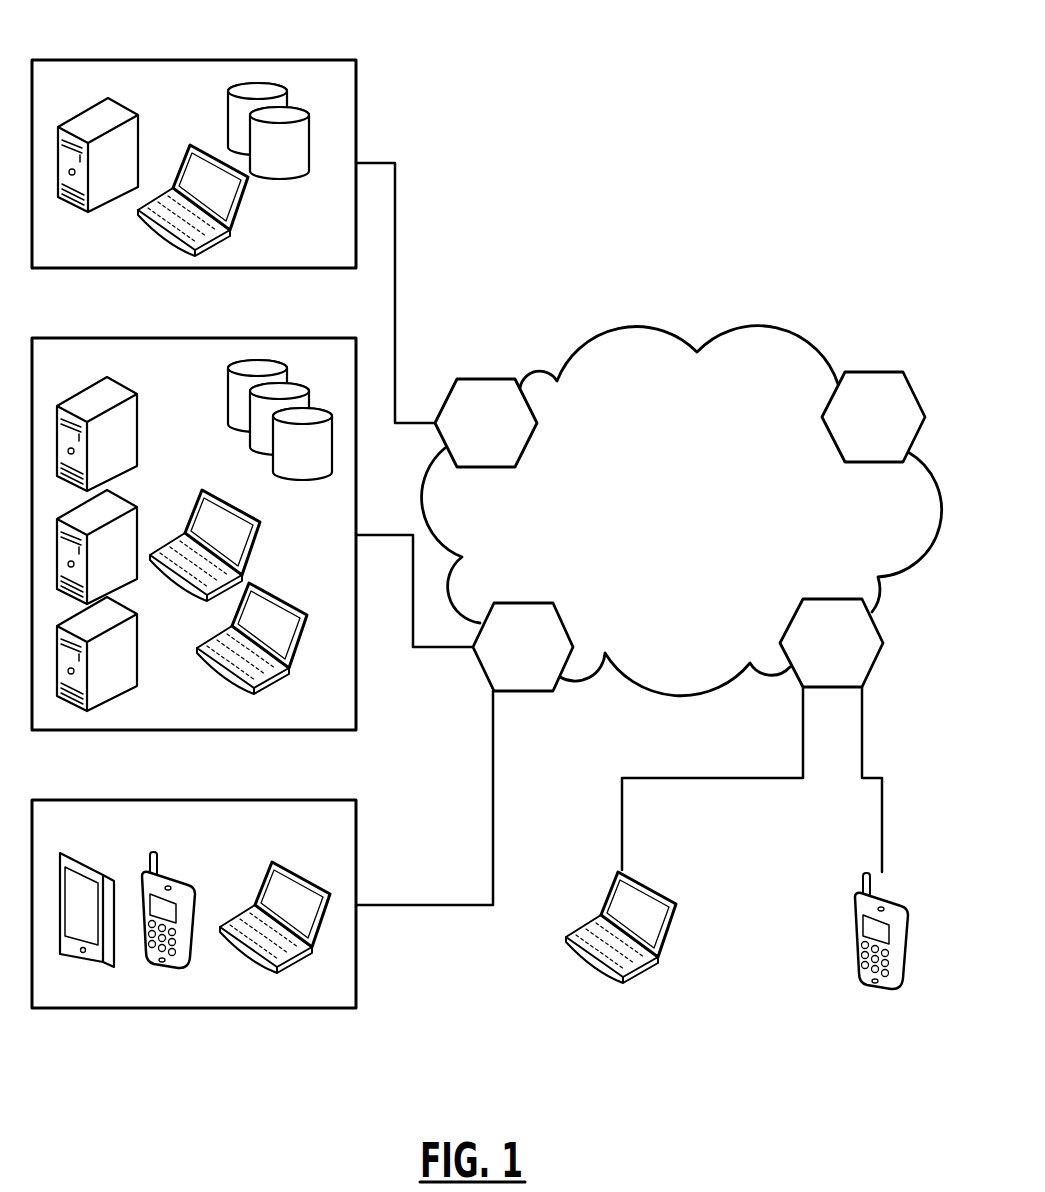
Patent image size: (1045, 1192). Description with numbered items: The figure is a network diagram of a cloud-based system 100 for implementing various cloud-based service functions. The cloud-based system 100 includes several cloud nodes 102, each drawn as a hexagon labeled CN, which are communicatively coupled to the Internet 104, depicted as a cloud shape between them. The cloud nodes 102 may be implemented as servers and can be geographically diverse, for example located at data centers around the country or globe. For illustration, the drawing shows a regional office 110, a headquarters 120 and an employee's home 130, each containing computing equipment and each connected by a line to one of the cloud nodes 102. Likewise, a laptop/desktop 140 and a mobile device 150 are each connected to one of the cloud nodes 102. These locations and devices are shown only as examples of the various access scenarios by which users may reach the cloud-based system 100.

The cloud-based system 100 is at (490, 507).
The cloud node 102 is at (482, 379).
The Internet 104 is at (812, 342).
The regional office 110 is at (267, 60).
The headquarters 120 is at (273, 338).
The employee's home 130 is at (278, 800).
The laptop/desktop 140 is at (675, 907).
The mobile device 150 is at (853, 923).